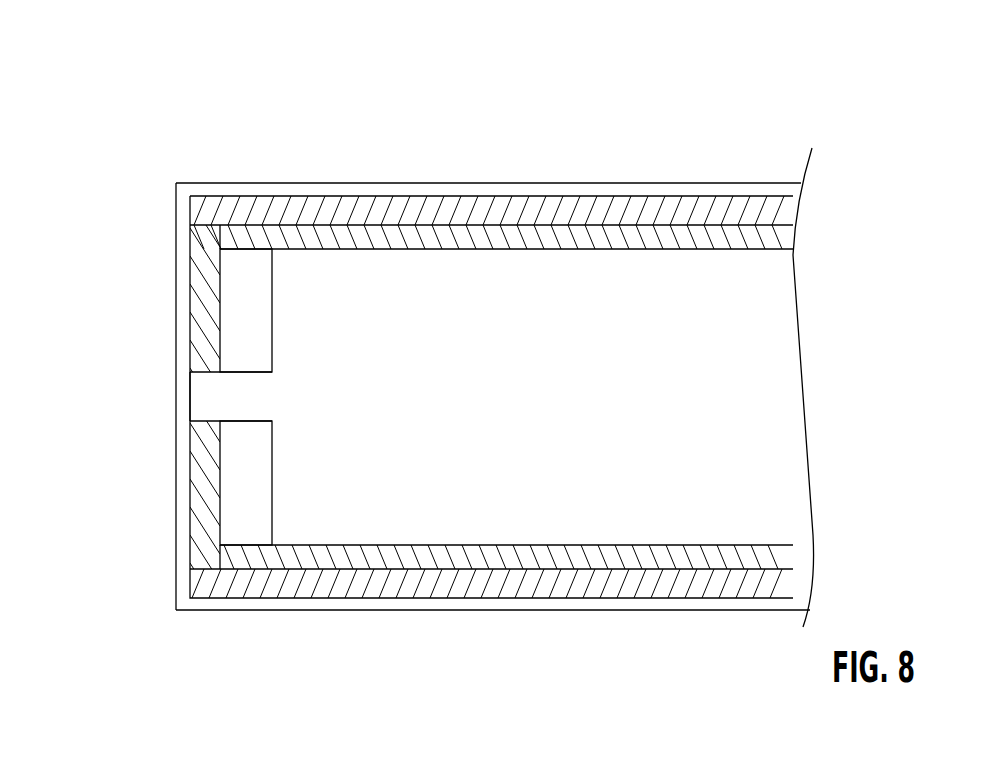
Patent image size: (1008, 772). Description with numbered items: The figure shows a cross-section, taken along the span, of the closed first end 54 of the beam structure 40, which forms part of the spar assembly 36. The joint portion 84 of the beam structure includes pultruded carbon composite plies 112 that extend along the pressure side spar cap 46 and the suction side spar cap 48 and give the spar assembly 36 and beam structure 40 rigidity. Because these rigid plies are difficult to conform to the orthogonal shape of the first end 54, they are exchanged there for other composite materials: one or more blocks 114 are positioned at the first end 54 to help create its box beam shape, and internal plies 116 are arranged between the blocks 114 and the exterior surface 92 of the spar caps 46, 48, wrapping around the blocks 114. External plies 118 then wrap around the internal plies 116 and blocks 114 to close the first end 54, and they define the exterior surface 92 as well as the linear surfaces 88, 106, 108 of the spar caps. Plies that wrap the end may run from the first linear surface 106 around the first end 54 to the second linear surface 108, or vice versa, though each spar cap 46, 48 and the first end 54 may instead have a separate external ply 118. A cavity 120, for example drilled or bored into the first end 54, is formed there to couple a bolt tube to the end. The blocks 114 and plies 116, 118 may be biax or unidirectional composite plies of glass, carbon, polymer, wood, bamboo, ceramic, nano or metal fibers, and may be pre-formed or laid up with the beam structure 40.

The spar assembly 36 is at (700, 58).
The beam structure 40 is at (185, 50).
The pressure side spar cap 46 is at (572, 628).
The suction side spar cap 48 is at (572, 160).
The first end 54 is at (100, 330).
The joint portion 84 is at (458, 83).
The linear surface 88 is at (360, 183).
The exterior surface 92 is at (672, 183).
The first linear surface 106 is at (433, 183).
The second linear surface 108 is at (410, 610).
The pultruded carbon composite ply 112 is at (637, 215).
The block 114 is at (262, 330).
The internal ply 116 is at (212, 298).
The external ply 118 is at (305, 183).
The cavity 120 is at (155, 395).